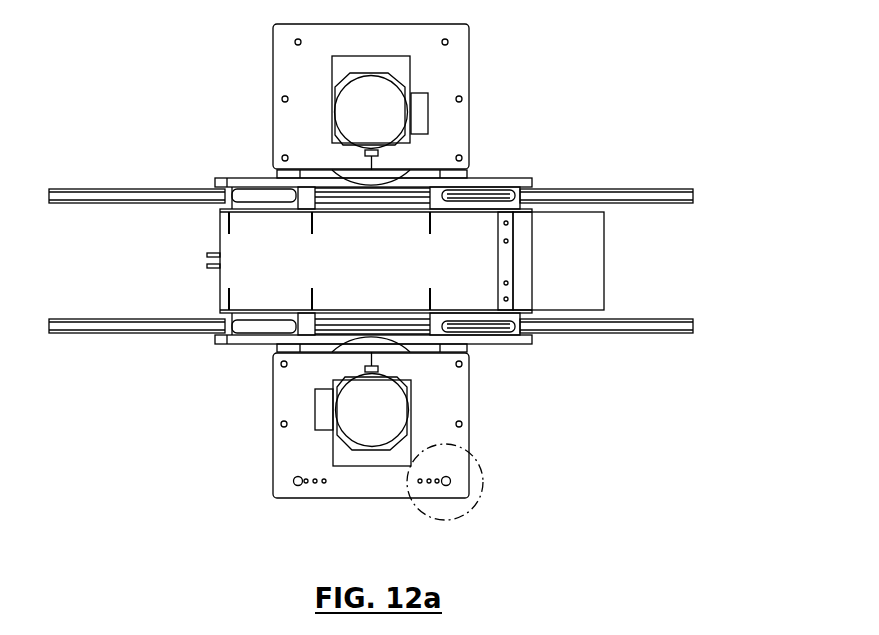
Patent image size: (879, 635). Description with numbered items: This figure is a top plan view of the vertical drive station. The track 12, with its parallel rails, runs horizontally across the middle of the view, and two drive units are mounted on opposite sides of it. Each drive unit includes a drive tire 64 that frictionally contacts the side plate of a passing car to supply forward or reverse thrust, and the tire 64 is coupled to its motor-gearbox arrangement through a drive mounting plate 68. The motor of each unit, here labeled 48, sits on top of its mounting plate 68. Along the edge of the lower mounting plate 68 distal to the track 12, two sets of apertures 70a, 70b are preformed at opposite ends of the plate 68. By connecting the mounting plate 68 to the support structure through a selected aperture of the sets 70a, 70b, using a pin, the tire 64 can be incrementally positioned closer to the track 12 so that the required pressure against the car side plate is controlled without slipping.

The track 12 is at (645, 188).
The motor 48 is at (348, 128).
The drive tire 64 is at (468, 173).
The drive mounting plate 68 is at (452, 78).
The first set of apertures 70a is at (327, 503).
The second set of apertures 70b is at (460, 503).